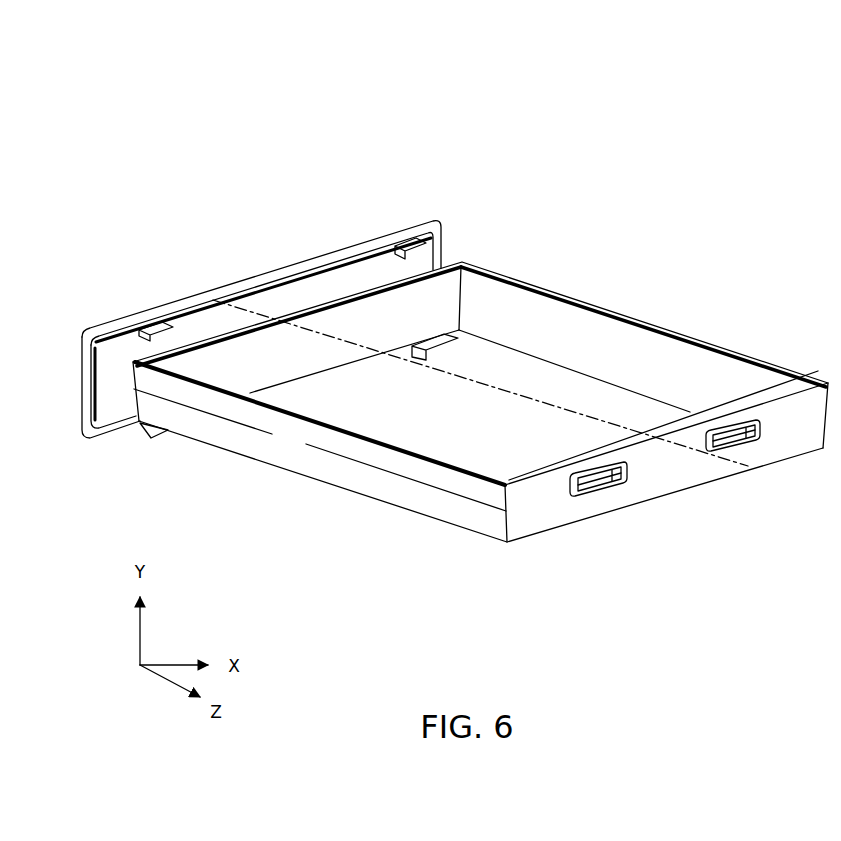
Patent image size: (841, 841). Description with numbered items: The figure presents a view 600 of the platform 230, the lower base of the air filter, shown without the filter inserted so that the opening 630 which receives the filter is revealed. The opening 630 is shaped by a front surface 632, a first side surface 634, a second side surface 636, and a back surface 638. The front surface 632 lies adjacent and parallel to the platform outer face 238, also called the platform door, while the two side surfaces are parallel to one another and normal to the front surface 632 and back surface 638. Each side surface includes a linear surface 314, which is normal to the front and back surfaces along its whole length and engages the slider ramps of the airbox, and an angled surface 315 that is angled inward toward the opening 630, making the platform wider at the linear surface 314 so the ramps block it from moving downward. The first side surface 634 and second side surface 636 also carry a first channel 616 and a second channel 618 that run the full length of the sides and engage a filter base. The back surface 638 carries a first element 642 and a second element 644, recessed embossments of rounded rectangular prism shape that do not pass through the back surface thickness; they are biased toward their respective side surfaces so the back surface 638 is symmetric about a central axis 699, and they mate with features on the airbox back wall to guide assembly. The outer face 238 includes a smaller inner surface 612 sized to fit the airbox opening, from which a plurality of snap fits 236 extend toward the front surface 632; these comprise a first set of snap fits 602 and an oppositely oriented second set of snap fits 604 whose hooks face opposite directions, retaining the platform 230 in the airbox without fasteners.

The view 600 is at (487, 325).
The platform 230 is at (403, 292).
The plurality of snap fits 236 is at (206, 480).
The platform outer face 238 is at (195, 293).
The inner surface 612 is at (332, 248).
The first set of snap fits 602 is at (153, 318).
The second set of snap fits 604 is at (452, 330).
The second channel 618 is at (695, 337).
The second side surface 636 is at (587, 359).
The front surface 632 is at (270, 363).
The central axis 699 is at (613, 427).
The first channel 616 is at (363, 430).
The opening 630 is at (462, 426).
The first side surface 634 is at (272, 459).
The back surface 638 is at (632, 481).
The second element 644 is at (740, 450).
The first element 642 is at (590, 498).
The linear surface 314 is at (452, 473).
The angled surface 315 is at (357, 486).